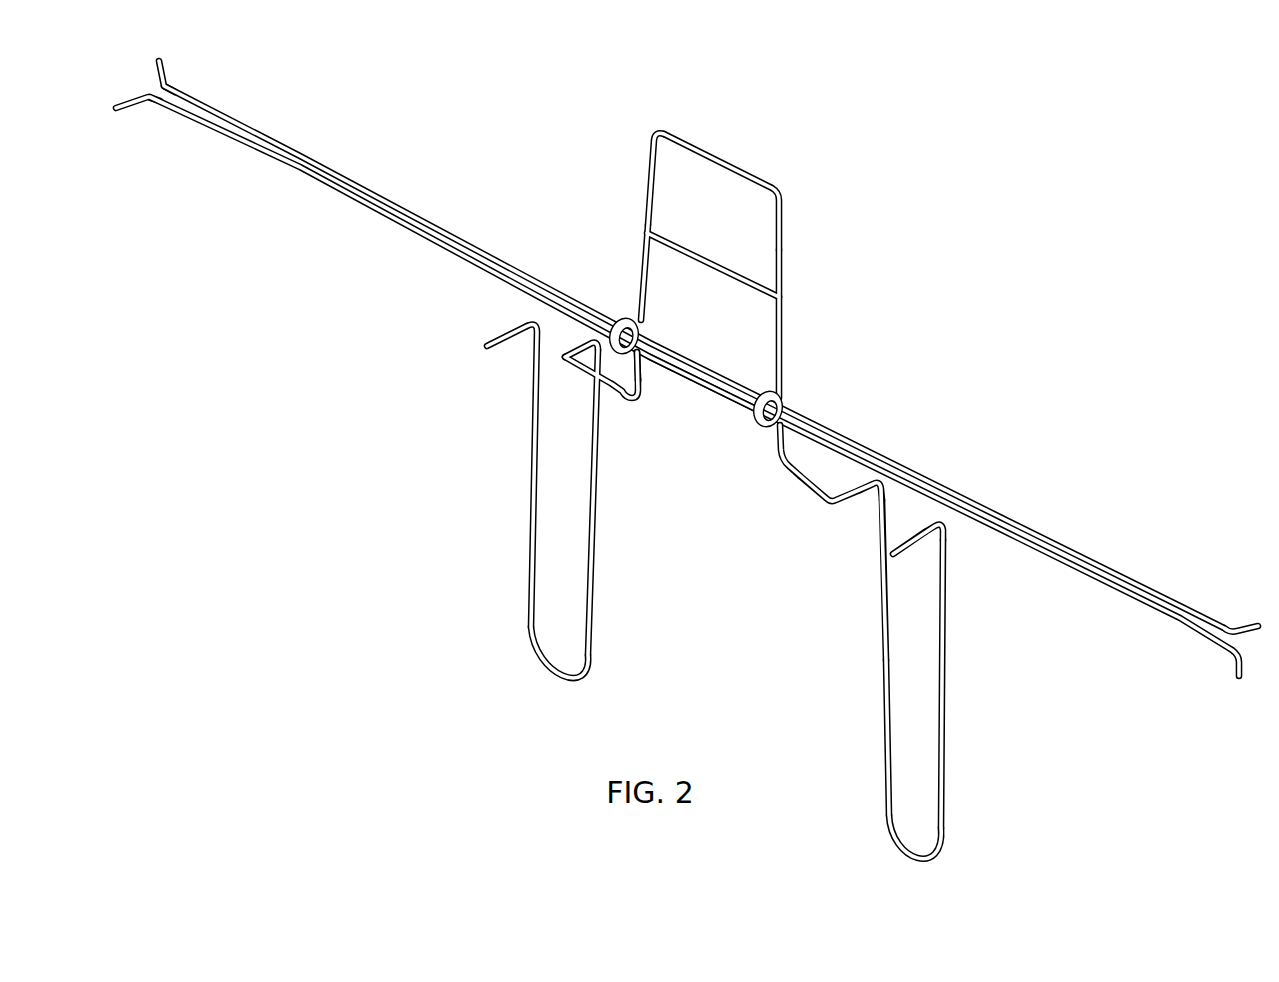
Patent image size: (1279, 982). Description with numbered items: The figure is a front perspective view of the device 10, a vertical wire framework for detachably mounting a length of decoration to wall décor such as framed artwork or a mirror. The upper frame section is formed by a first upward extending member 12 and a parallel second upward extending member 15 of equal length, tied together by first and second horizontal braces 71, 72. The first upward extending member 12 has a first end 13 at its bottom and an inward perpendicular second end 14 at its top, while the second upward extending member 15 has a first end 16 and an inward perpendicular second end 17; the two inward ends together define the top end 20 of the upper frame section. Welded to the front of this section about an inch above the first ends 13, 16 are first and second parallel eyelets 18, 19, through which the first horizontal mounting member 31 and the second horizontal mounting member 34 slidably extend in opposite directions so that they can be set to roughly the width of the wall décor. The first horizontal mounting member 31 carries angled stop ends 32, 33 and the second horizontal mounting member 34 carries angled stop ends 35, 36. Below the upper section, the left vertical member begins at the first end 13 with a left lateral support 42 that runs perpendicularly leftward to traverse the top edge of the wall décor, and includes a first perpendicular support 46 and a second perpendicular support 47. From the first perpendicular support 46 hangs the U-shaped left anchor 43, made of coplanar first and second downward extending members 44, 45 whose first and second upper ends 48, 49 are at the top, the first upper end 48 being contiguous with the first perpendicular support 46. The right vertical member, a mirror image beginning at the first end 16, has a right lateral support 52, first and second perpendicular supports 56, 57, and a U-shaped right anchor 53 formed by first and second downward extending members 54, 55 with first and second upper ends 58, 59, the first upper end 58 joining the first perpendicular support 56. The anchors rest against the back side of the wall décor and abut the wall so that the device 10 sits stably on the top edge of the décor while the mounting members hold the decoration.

The device 10 is at (1010, 182).
The first upward extending member 12 is at (658, 265).
The first end 13 is at (641, 372).
The inward perpendicular second end 14 is at (661, 128).
The second upward extending member 15 is at (786, 308).
The first end 16 is at (778, 446).
The inward perpendicular second end 17 is at (784, 186).
The first parallel eyelet 18 is at (606, 318).
The second parallel eyelet 19 is at (786, 400).
The top end 20 is at (722, 150).
The first horizontal mounting member 31 is at (708, 331).
The angled stop end 32 is at (178, 66).
The angled stop end 33 is at (1250, 623).
The second horizontal mounting member 34 is at (677, 398).
The angled stop end 35 is at (137, 110).
The angled stop end 36 is at (1233, 668).
The left lateral support 42 is at (614, 400).
The left anchor 43 is at (522, 501).
The first downward extending member 44 is at (594, 518).
The second downward extending member 45 is at (532, 502).
The first perpendicular support 46 is at (608, 332).
The second perpendicular support 47 is at (487, 335).
The first upper end 48 is at (590, 345).
The second upper end 49 is at (565, 358).
The right lateral support 52 is at (820, 494).
The right anchor 53 is at (920, 667).
The first downward extending member 54 is at (884, 727).
The second downward extending member 55 is at (949, 665).
The first perpendicular support 56 is at (869, 490).
The second perpendicular support 57 is at (906, 553).
The first upper end 58 is at (872, 520).
The second upper end 59 is at (948, 535).
The first horizontal brace 71 is at (715, 403).
The second horizontal brace 72 is at (732, 270).